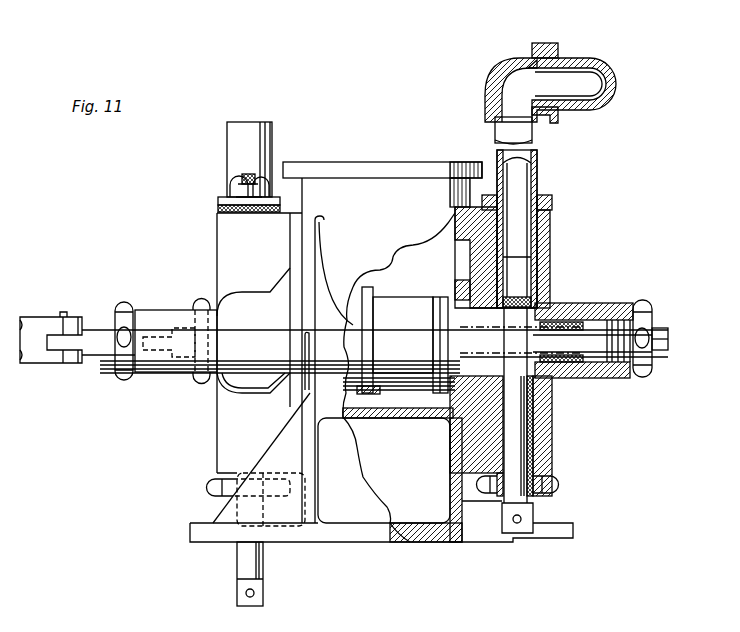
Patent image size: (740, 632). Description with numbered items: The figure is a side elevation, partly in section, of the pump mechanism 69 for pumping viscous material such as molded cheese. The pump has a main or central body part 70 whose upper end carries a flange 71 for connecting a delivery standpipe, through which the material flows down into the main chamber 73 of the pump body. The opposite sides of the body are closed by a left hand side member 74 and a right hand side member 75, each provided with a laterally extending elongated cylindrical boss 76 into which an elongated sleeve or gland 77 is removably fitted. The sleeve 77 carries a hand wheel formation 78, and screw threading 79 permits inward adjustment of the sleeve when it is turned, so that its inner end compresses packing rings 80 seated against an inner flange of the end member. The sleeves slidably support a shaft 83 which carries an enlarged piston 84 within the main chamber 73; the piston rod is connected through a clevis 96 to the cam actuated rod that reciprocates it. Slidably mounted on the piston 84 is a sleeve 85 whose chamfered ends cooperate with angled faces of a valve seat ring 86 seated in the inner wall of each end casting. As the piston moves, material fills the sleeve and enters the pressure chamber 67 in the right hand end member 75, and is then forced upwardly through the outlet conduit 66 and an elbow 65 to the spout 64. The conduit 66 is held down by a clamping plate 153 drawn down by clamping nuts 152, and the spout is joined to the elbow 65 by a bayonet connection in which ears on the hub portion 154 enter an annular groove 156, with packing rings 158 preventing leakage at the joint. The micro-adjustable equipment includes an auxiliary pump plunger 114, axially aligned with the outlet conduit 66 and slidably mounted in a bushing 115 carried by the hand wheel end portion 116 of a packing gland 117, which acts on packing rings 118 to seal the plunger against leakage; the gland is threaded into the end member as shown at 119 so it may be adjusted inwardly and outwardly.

The spout 64 is at (604, 88).
The elbow 65 is at (517, 62).
The conduit 66 is at (233, 141).
The pressure chamber 67 is at (374, 390).
The pump mechanism 69 is at (401, 543).
The main or central body part 70 is at (351, 190).
The flange 71 is at (390, 160).
The main chamber 73 is at (410, 262).
The side member 74 is at (209, 250).
The side member 75 is at (456, 261).
The cylindrical boss 76 is at (163, 373).
The sleeve or gland 77 is at (610, 332).
The hand wheel formation 78 is at (122, 308).
The screw threading 79 is at (628, 365).
The packing rings 80 is at (553, 305).
The shaft 83 is at (666, 322).
The piston 84 is at (448, 298).
The sleeve 85 is at (393, 298).
The valve seat ring 86 is at (398, 403).
The clevis 96 is at (40, 318).
The auxiliary pump plunger 114 is at (237, 510).
The bushing 115 is at (533, 497).
The hand wheel end portion 116 is at (207, 480).
The packing gland 117 is at (551, 431).
The packing rings 118 is at (537, 396).
The threaded connection 119 is at (480, 474).
The clamping nuts 152 is at (229, 183).
The clamping plate 153 is at (553, 205).
The hub portion 154 is at (574, 60).
The annular groove 156 is at (551, 43).
The packing rings 158 is at (532, 58).